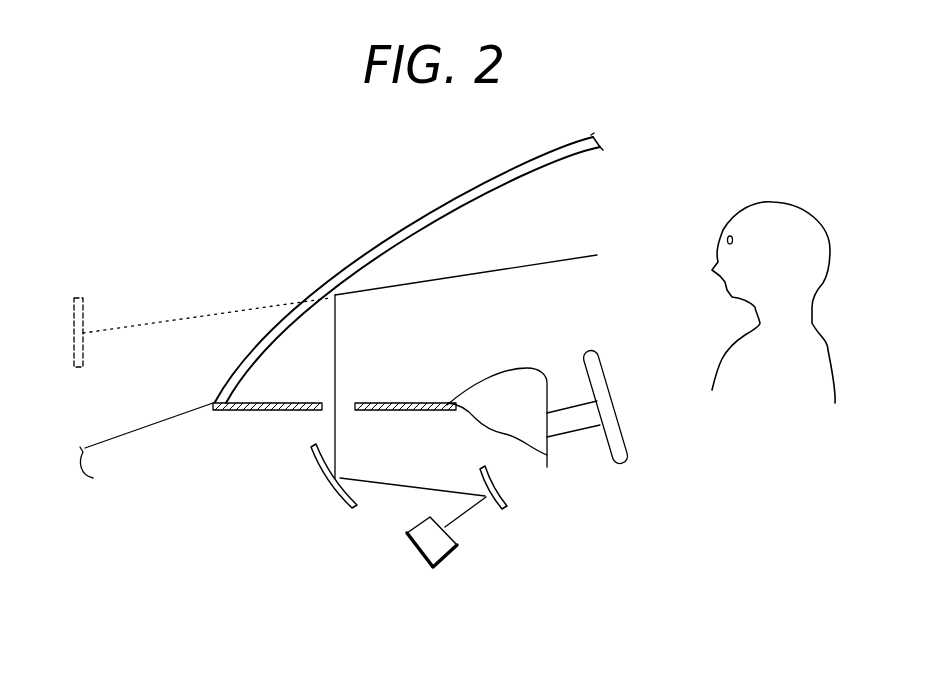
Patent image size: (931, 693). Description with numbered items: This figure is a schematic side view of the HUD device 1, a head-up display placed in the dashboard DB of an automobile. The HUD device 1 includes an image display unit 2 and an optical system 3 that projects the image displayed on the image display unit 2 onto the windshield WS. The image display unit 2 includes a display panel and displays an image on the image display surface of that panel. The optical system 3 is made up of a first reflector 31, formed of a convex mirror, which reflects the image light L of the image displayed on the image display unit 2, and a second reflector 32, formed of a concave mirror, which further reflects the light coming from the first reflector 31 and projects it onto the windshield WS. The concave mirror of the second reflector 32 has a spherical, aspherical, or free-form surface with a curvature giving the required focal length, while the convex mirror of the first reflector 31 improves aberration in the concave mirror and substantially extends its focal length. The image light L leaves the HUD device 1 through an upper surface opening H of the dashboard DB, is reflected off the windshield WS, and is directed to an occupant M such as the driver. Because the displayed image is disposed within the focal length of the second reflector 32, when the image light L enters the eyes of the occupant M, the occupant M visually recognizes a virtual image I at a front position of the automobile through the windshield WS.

The HUD device 1 is at (406, 549).
The image display unit 2 is at (394, 572).
The optical system 3 is at (406, 513).
The first reflector 31 is at (498, 514).
The second reflector 32 is at (318, 478).
The windshield WS is at (545, 160).
The upper surface opening H is at (322, 398).
The image light L is at (337, 347).
The virtual image I is at (80, 293).
The dashboard DB is at (528, 365).
The occupant M is at (780, 200).